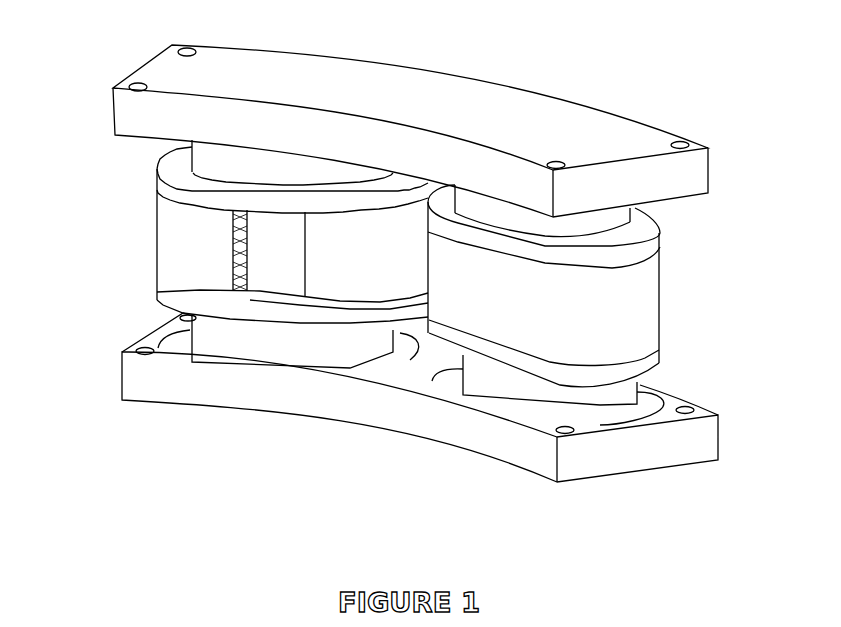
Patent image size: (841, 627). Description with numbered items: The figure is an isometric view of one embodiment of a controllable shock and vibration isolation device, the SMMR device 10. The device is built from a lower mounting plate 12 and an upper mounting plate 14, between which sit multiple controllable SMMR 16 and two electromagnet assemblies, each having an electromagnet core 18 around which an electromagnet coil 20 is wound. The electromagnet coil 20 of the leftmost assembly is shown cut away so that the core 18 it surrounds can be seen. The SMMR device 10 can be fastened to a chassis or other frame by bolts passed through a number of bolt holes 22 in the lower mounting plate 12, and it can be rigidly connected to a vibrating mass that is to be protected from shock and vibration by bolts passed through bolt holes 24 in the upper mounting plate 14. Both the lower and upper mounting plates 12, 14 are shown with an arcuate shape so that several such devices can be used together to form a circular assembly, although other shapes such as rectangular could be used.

The SMMR device 10 is at (665, 110).
The lower mounting plate 12 is at (377, 407).
The upper mounting plate 14 is at (670, 187).
The controllable SMMR 16 is at (265, 350).
The electromagnet core 18 is at (273, 263).
The electromagnet coil 20 is at (198, 252).
The bolt holes 22 is at (190, 320).
The bolt holes 24 is at (128, 85).